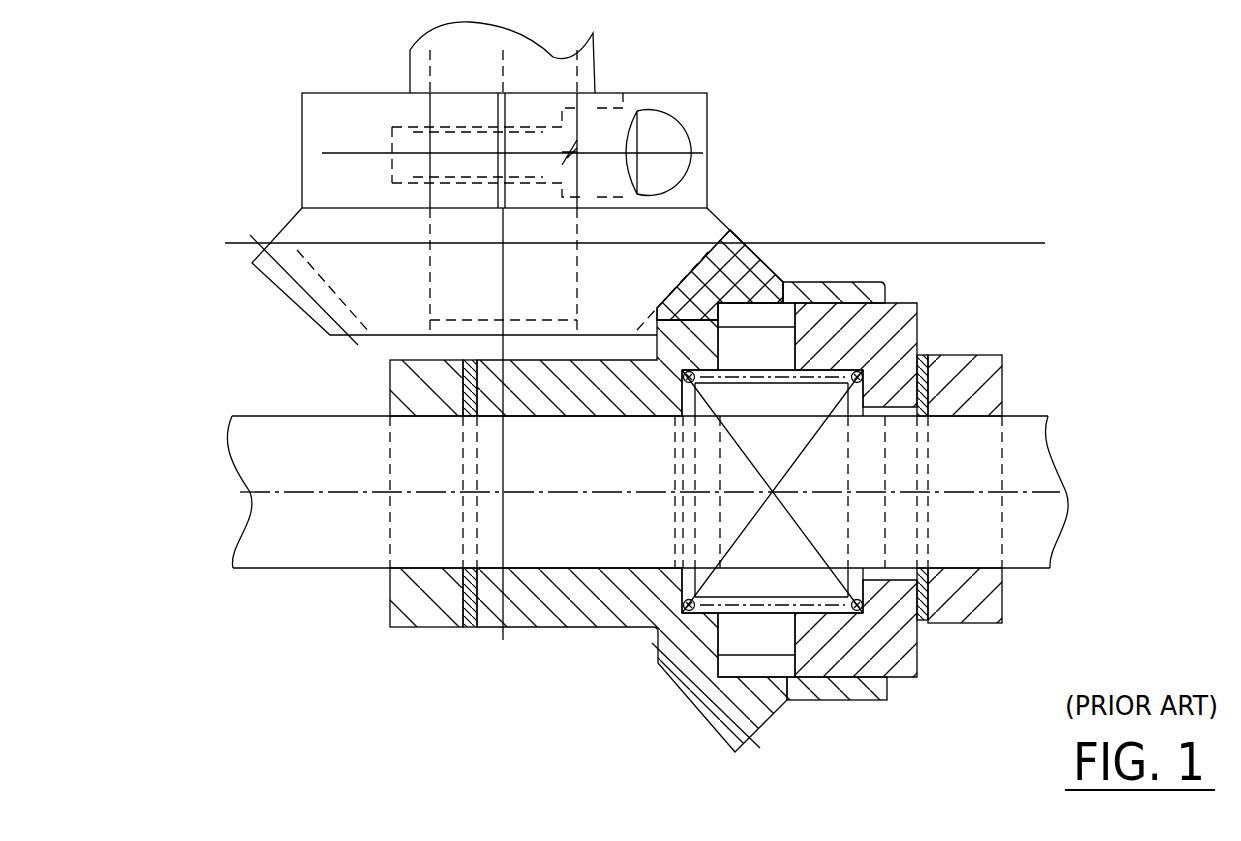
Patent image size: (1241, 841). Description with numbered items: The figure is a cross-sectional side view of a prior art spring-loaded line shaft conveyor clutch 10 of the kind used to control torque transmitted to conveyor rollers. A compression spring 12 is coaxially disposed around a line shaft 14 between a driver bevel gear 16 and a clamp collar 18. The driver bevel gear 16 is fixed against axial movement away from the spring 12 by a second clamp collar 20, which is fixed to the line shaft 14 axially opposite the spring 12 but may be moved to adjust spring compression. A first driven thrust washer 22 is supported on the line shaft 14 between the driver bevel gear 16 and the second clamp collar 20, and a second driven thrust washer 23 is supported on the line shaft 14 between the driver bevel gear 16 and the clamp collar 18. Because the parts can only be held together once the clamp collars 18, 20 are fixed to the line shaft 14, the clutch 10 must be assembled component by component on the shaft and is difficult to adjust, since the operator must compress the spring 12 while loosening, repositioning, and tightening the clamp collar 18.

The line shaft conveyor clutch 10 is at (1010, 108).
The compression spring 12 is at (740, 535).
The line shaft 14 is at (283, 555).
The driver bevel gear 16 is at (712, 692).
The clamp collar 18 is at (975, 597).
The second clamp collar 20 is at (407, 622).
The first driven thrust washer 22 is at (470, 625).
The second driven thrust washer 23 is at (922, 620).